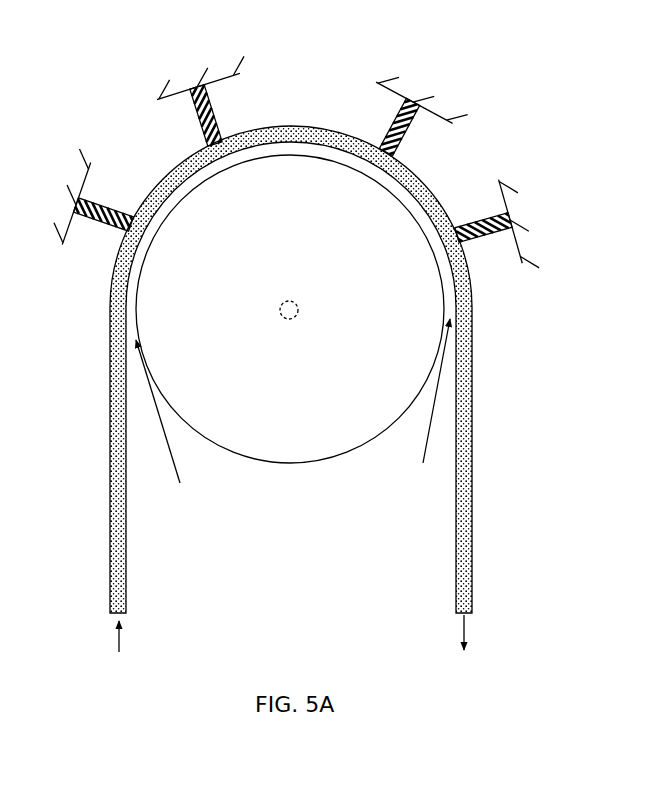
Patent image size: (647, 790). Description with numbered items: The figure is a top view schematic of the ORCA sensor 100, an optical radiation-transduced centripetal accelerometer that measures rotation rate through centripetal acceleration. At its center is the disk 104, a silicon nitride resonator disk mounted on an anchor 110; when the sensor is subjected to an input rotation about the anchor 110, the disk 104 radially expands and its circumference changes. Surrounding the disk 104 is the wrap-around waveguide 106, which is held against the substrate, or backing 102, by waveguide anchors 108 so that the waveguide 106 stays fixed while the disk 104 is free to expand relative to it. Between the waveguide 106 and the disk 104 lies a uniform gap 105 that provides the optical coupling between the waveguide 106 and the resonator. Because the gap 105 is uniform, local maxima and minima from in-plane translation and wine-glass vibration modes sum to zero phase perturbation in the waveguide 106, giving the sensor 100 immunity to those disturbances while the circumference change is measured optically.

The ORCA sensor 100 is at (510, 129).
The backing 102 is at (532, 245).
The disk 104 is at (290, 465).
The uniform gap 105 is at (293, 415).
The waveguide 106 is at (110, 598).
The waveguide anchors 108 is at (472, 240).
The anchor 110 is at (283, 319).